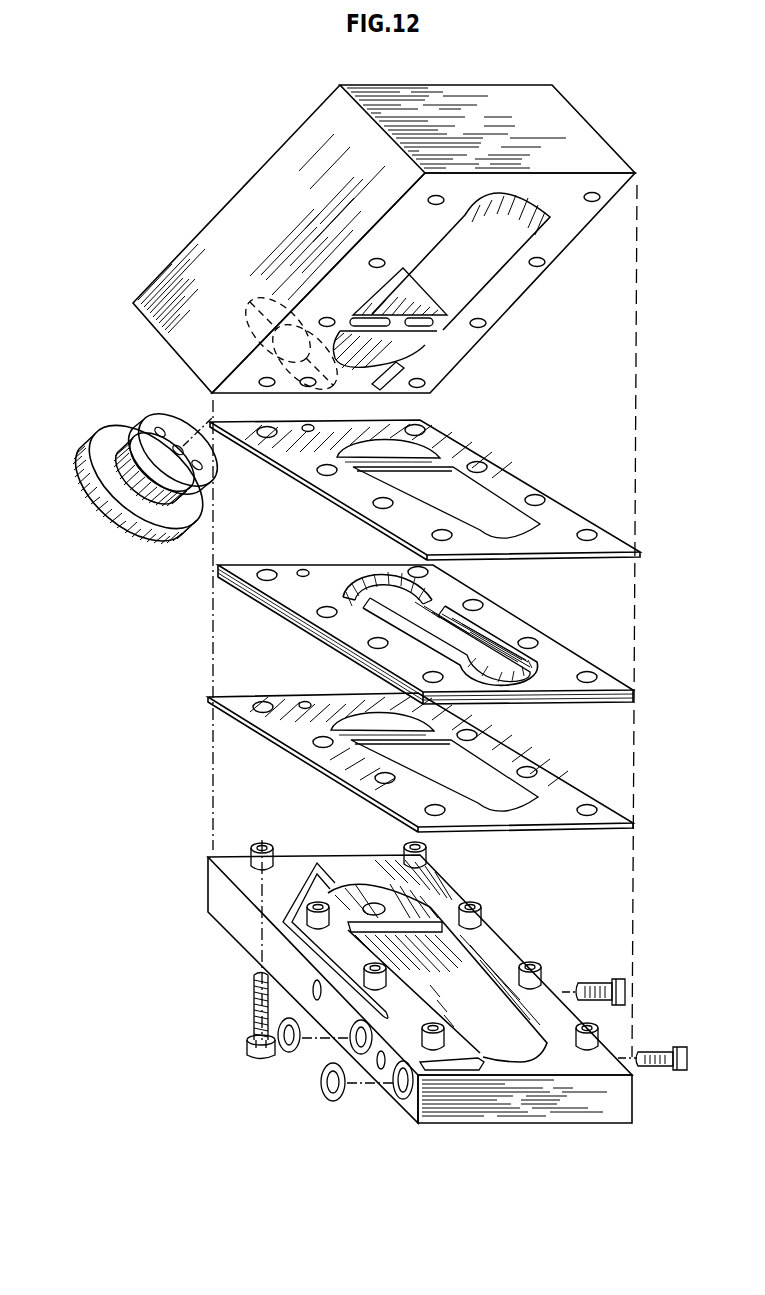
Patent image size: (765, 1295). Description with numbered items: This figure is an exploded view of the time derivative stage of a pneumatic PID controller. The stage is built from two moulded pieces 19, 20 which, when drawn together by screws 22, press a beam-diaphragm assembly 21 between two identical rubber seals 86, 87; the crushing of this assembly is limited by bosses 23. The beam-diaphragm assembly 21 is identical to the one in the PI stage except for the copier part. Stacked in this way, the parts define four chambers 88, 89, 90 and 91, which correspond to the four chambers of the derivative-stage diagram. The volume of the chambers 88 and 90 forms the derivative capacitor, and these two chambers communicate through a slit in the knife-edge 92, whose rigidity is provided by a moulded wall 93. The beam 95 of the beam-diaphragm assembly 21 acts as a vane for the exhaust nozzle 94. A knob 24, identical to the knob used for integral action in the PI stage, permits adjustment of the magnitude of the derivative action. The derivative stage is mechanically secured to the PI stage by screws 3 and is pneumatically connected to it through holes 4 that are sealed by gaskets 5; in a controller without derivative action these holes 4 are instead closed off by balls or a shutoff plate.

The moulded piece 20 is at (583, 133).
The chamber 88 is at (483, 259).
The moulded wall 93 is at (385, 298).
The knife-edge 92 is at (430, 322).
The chamber 90 is at (398, 358).
The knob 24 is at (84, 452).
The rubber seal 86 is at (553, 508).
The beam 95 is at (418, 631).
The beam-diaphragm assembly 21 is at (568, 663).
The rubber seal 87 is at (560, 808).
The bosses 23 is at (253, 850).
The exhaust nozzle 94 is at (362, 900).
The chamber 91 is at (410, 908).
The chamber 89 is at (452, 993).
The screws 3 is at (598, 984).
The screws 22 is at (246, 1049).
The gaskets 5 is at (321, 1087).
The holes 4 is at (396, 1092).
The moulded piece 19 is at (587, 1112).